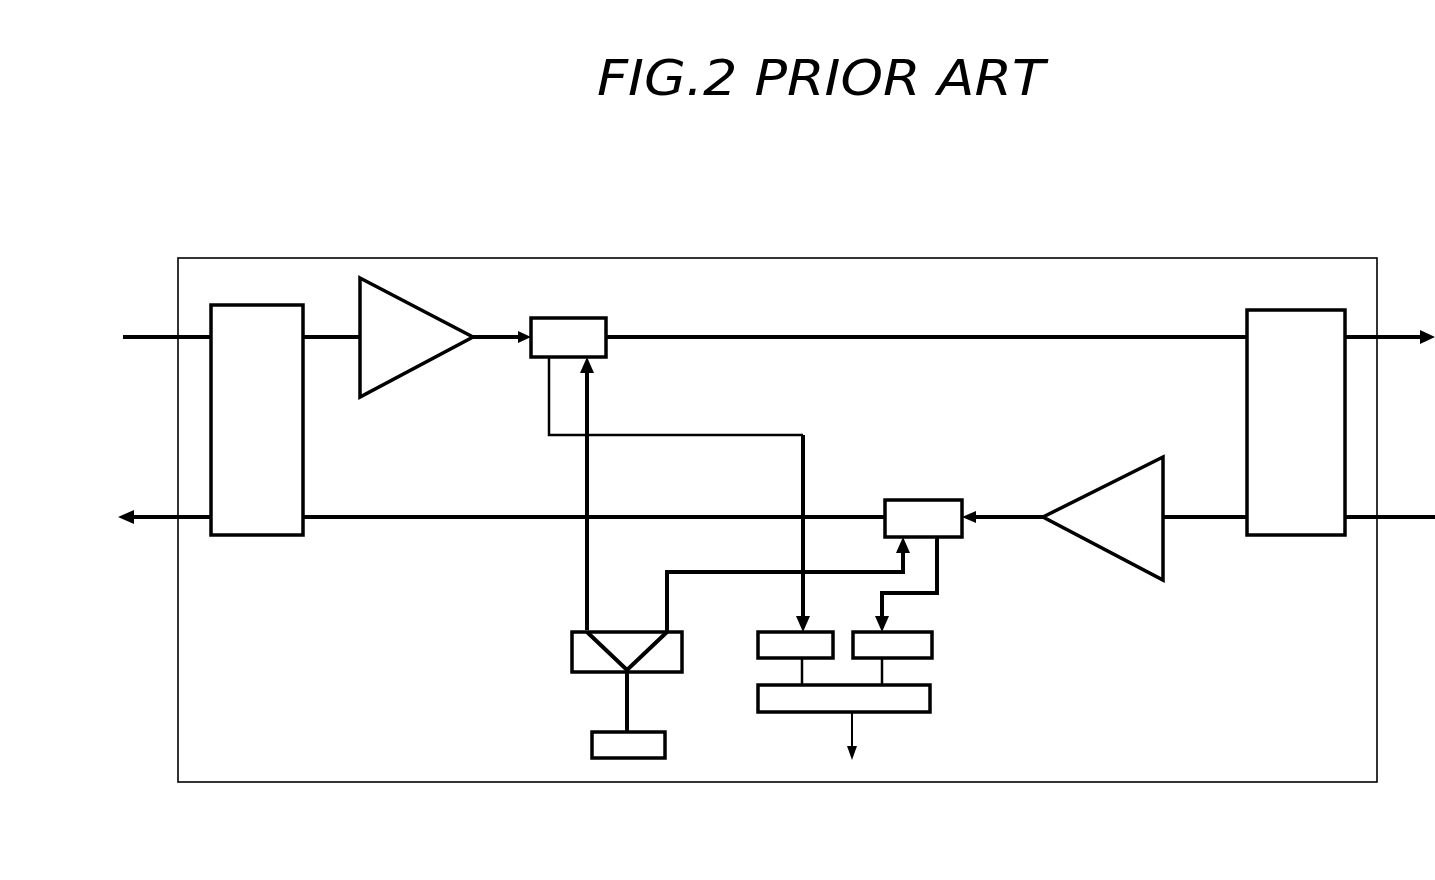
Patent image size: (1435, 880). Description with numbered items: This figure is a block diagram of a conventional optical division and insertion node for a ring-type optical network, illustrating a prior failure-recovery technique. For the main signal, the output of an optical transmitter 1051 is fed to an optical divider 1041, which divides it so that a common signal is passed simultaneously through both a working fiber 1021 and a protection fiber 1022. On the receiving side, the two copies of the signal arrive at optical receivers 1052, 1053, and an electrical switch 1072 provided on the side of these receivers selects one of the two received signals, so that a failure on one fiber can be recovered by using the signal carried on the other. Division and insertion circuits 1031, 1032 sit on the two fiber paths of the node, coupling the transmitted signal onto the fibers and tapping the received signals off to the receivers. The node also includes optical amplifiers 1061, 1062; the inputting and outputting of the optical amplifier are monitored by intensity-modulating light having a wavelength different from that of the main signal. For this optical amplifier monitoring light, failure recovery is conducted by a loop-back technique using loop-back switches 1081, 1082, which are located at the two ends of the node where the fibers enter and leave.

The working fiber 1021 is at (1249, 577).
The protection fiber 1022 is at (926, 384).
The division and insertion circuit 1031 is at (929, 500).
The division and insertion circuit 1032 is at (575, 318).
The optical divider 1041 is at (572, 648).
The optical transmitter 1051 is at (618, 752).
The optical receiver 1052 is at (922, 645).
The optical receiver 1053 is at (780, 652).
The optical amplifier 1061 is at (1070, 593).
The optical amplifier 1062 is at (392, 305).
The electrical switch 1072 is at (920, 697).
The loop-back switch 1081 is at (254, 420).
The loop-back switch 1082 is at (1296, 422).